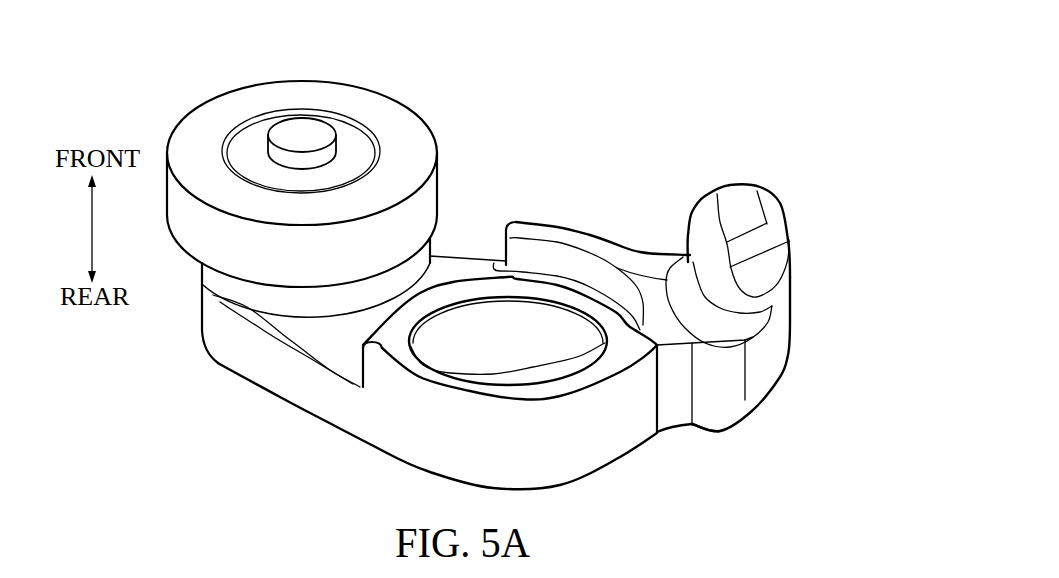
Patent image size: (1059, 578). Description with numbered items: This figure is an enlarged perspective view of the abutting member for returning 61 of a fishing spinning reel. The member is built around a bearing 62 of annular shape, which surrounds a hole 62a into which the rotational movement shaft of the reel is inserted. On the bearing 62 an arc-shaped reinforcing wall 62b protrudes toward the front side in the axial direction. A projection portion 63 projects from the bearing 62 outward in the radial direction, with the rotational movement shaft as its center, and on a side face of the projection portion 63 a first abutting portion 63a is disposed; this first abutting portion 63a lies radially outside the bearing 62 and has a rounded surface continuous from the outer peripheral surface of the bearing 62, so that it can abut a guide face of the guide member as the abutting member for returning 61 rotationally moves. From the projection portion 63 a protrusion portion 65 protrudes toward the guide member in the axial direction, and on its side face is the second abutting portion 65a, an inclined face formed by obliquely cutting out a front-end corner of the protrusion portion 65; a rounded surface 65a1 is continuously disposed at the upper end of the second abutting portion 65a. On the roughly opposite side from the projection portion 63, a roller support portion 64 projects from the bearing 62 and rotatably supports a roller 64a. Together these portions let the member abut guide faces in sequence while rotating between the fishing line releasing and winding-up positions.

The abutting member for returning 61 is at (609, 69).
The bearing 62 is at (353, 424).
The hole 62a is at (487, 322).
The reinforcing wall 62b is at (551, 232).
The projection portion 63 is at (763, 378).
The first abutting portion 63a is at (703, 420).
The roller support portion 64 is at (244, 352).
The roller 64a is at (341, 91).
The protrusion portion 65 is at (773, 203).
The second abutting portion 65a is at (778, 272).
The rounded surface 65a1 is at (767, 240).